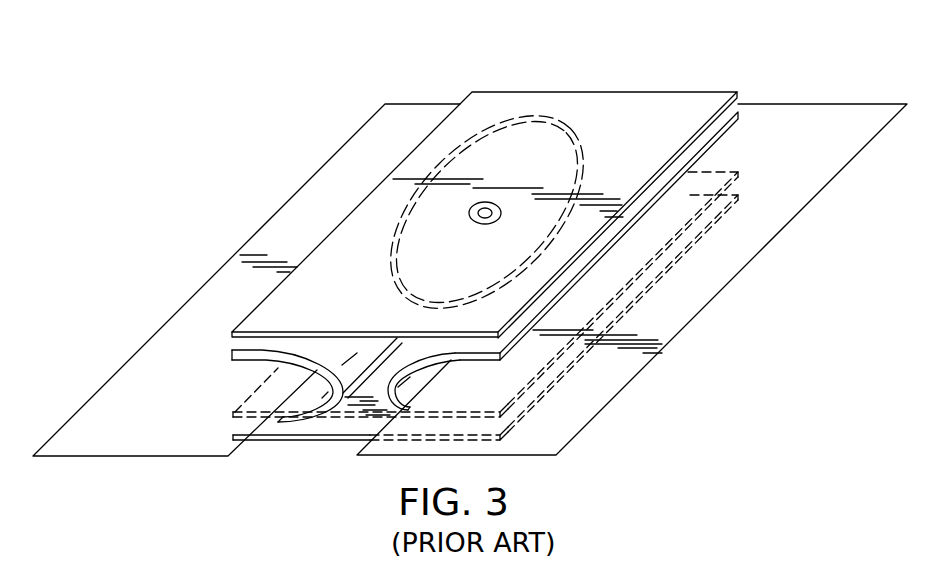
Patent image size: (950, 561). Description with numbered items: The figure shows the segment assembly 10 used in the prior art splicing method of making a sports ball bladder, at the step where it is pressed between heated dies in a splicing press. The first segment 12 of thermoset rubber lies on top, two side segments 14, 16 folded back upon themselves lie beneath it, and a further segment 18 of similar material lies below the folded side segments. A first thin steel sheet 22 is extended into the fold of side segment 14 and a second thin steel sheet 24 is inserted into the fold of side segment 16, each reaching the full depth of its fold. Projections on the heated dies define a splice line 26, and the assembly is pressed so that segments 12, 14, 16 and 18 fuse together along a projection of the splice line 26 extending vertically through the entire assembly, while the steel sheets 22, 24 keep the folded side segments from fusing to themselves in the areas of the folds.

The segment assembly 10 is at (674, 71).
The first segment 12 is at (610, 102).
The side segment 14 is at (387, 408).
The side segment 16 is at (282, 420).
The further segment 18 is at (308, 427).
The first thin steel sheet 22 is at (732, 265).
The second thin steel sheet 24 is at (282, 220).
The splice line 26 is at (512, 118).